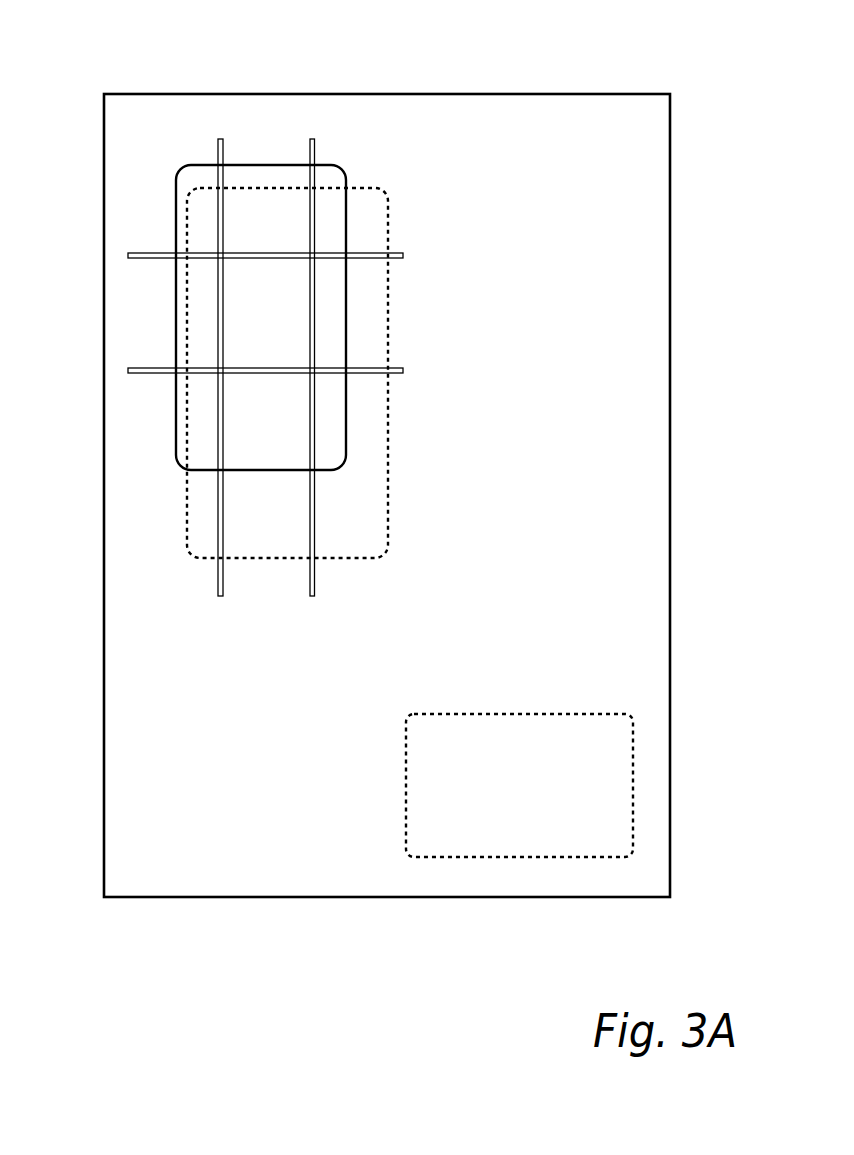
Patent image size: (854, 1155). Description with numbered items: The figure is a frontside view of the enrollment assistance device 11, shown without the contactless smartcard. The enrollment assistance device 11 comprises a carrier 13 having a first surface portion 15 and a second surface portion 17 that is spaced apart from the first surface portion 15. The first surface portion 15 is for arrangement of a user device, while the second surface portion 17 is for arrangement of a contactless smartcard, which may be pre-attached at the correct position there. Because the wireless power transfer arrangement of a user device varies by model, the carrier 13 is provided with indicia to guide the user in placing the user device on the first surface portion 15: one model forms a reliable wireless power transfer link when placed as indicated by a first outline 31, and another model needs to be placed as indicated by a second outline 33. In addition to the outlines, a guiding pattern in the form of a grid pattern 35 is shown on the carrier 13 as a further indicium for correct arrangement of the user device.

The enrollment assistance device 11 is at (708, 460).
The carrier 13 is at (572, 338).
The first surface portion 15 is at (226, 303).
The second surface portion 17 is at (547, 700).
The first outline 31 is at (346, 218).
The second outline 33 is at (187, 515).
The grid pattern 35 is at (218, 144).